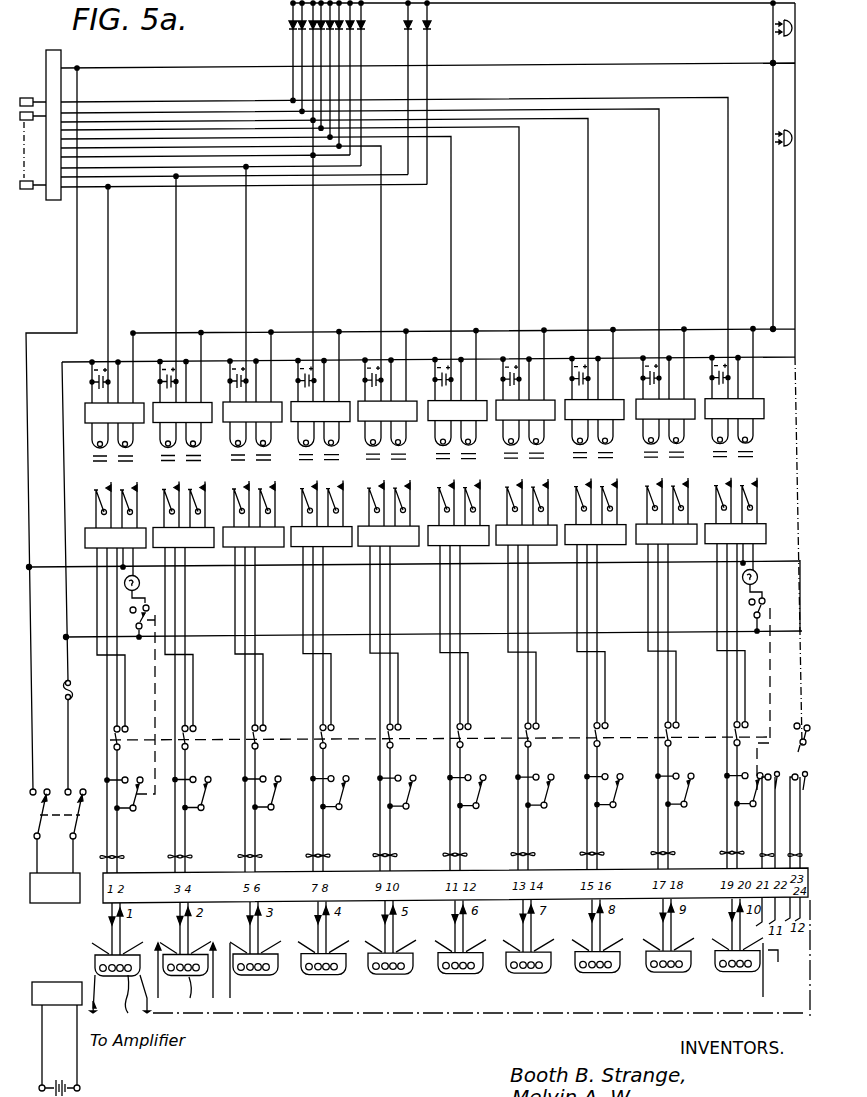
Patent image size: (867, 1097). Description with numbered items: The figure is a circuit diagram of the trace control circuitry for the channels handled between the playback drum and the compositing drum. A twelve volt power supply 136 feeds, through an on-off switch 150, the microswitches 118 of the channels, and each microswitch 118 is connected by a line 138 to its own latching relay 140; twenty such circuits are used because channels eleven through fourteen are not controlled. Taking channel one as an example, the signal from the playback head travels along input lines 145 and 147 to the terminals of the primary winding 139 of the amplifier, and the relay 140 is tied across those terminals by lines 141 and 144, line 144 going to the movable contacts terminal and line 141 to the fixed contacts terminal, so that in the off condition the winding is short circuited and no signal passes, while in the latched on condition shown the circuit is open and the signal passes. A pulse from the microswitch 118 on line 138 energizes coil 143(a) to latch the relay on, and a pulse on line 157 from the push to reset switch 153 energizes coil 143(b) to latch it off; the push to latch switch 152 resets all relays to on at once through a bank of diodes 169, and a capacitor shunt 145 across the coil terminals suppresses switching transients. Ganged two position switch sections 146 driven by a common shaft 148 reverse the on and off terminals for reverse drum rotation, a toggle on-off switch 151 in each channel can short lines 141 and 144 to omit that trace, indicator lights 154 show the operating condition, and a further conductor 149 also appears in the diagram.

The microswitch 118 is at (30, 196).
The line 138 is at (92, 203).
The diodes 169 is at (362, 30).
The push to latch switch 152 is at (771, 29).
The push to reset switch 153 is at (771, 139).
The line 157 is at (742, 328).
The capacitor shunt 145 is at (400, 672).
The coil 143 is at (88, 443).
The latching relay 140 is at (90, 497).
The indicator light 154 is at (141, 584).
The on-off switch 151 is at (447, 705).
The common bus 149 is at (95, 622).
The common shaft 148 is at (148, 742).
The on-off switch 150 is at (76, 818).
The switch section 146 is at (806, 725).
The line 144 is at (137, 932).
The line 141 is at (415, 937).
The input line 147 is at (150, 1010).
The primary winding 139 is at (166, 1004).
The power supply 136 is at (62, 1082).